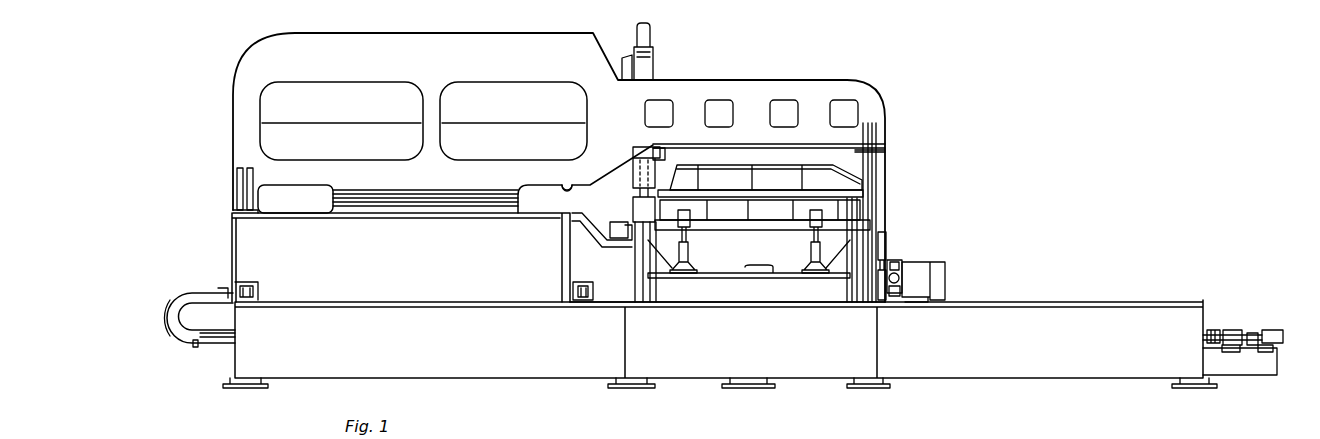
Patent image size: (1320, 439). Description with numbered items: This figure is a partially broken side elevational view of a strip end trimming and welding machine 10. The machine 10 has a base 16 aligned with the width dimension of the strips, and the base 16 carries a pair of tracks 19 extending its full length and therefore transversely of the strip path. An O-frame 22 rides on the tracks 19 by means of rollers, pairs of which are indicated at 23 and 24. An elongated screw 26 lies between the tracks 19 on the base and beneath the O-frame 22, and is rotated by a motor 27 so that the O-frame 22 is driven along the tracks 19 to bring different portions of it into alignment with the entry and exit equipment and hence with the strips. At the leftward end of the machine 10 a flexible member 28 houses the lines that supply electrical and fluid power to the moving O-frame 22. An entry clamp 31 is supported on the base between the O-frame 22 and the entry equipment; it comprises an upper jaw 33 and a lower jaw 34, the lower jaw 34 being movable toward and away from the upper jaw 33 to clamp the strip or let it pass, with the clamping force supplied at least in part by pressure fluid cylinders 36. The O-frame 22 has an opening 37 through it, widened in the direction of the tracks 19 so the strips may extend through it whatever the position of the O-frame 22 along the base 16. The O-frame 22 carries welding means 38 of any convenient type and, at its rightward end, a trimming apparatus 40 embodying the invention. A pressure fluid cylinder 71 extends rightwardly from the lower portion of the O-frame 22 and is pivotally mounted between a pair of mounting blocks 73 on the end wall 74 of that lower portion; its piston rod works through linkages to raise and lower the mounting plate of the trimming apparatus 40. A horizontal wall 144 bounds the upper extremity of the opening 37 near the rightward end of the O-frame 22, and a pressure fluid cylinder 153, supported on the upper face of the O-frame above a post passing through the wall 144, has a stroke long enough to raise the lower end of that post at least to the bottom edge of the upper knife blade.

The machine 10 is at (980, 79).
The base 16 is at (1225, 287).
The tracks 19 is at (995, 302).
The O-frame 22 is at (745, 88).
The rollers 23 is at (585, 302).
The rollers 24 is at (250, 285).
The elongated screw 26 is at (1215, 330).
The motor 27 is at (1272, 330).
The flexible member 28 is at (193, 295).
The entry clamp 31 is at (866, 172).
The upper jaw 33 is at (793, 178).
The lower jaw 34 is at (778, 212).
The pressure fluid cylinders 36 is at (812, 265).
The opening 37 is at (566, 186).
The welding means 38 is at (322, 199).
The trimming apparatus 40 is at (625, 194).
The pressure fluid cylinder 71 is at (920, 262).
The mounting blocks 73 is at (900, 262).
The end wall 74 is at (887, 245).
The horizontal wall 144 is at (713, 145).
The pressure fluid cylinder 153 is at (651, 30).